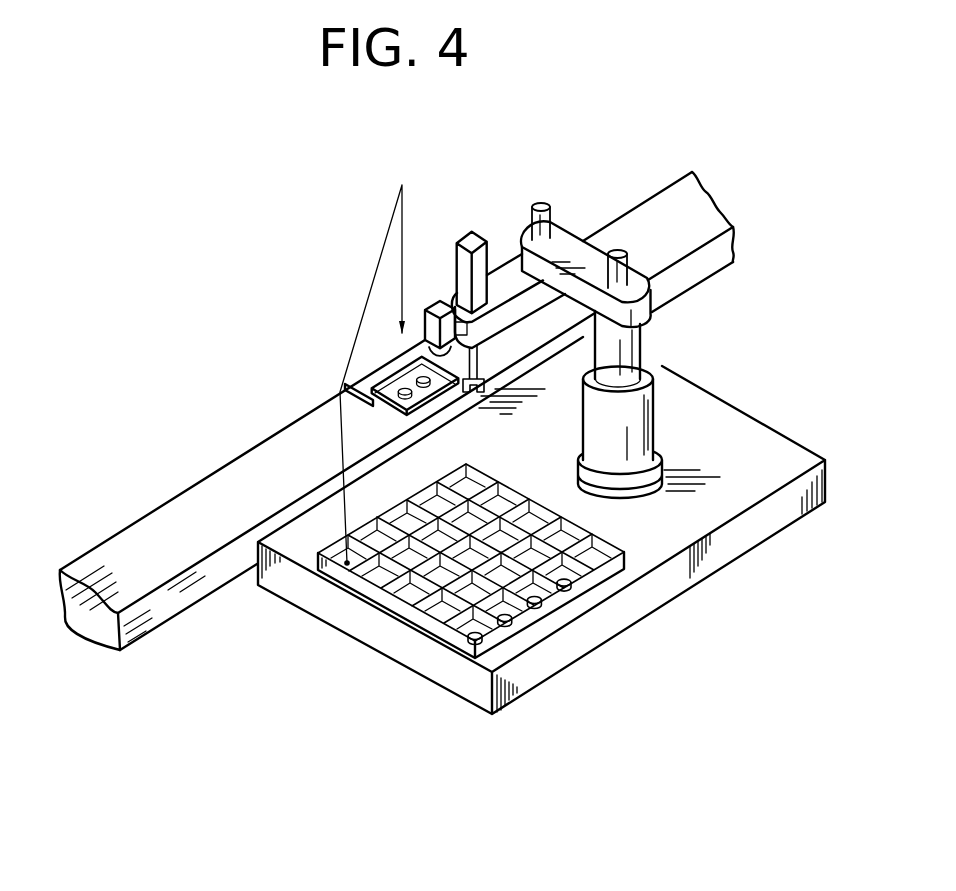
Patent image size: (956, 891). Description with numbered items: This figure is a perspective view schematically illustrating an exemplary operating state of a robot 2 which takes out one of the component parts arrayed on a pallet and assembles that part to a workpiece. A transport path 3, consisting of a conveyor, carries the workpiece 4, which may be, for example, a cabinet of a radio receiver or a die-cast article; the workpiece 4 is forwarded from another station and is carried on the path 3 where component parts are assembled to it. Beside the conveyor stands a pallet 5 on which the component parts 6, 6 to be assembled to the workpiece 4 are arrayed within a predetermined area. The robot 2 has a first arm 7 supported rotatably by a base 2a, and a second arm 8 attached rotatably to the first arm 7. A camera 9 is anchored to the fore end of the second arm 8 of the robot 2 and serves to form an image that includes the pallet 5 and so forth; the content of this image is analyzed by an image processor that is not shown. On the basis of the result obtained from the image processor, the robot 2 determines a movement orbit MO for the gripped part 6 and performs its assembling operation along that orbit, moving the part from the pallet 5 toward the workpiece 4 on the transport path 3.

The robot 2 is at (652, 322).
The base 2a is at (653, 432).
The transport path 3 is at (182, 492).
The workpiece 4 is at (440, 412).
The pallet 5 is at (415, 620).
The component parts 6 is at (470, 645).
The first arm 7 is at (577, 232).
The second arm 8 is at (505, 262).
The camera 9 is at (437, 300).
The movement orbit MO is at (360, 323).